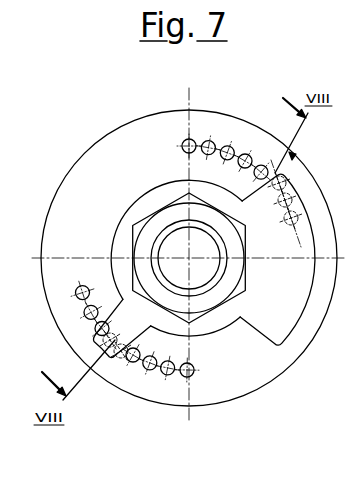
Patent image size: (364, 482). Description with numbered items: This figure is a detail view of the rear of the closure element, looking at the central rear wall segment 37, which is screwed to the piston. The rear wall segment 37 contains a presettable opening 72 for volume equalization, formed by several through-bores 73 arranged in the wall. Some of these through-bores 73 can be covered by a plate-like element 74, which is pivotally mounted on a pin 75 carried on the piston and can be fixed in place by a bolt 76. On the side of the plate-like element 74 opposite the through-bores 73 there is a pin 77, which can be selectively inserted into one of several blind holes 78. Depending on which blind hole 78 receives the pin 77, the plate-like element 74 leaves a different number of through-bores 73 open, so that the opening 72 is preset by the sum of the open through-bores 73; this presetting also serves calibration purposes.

The central rear wall segment 37 is at (100, 156).
The presettable opening 72 is at (290, 157).
The through-bores 73 is at (225, 145).
The plate-like element 74 is at (298, 181).
The pin 75 is at (203, 273).
The bolt 76 is at (202, 303).
The pin 77 is at (115, 350).
The blind holes 78 is at (182, 375).